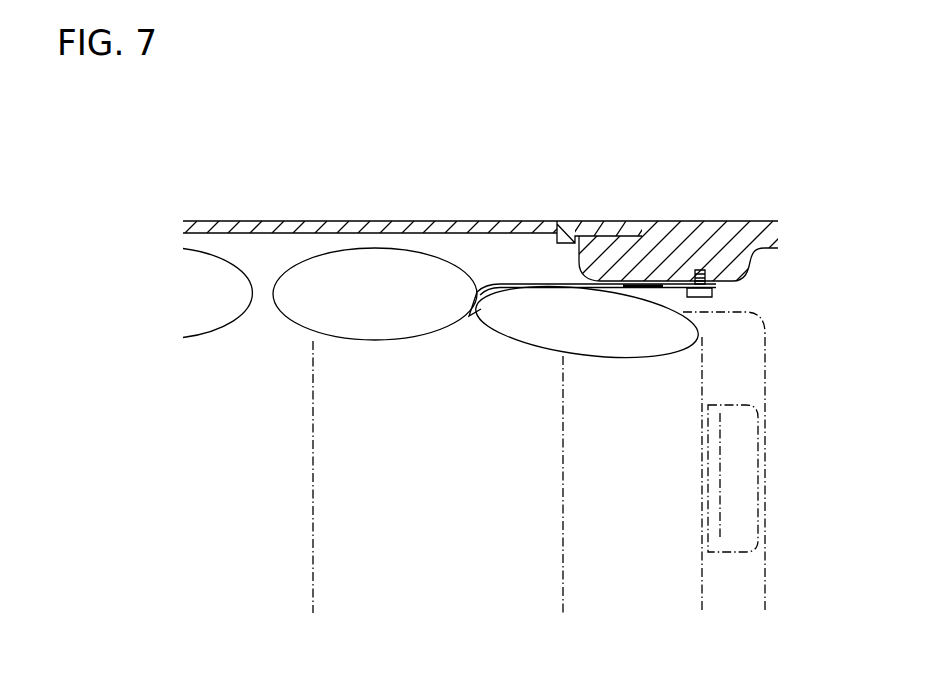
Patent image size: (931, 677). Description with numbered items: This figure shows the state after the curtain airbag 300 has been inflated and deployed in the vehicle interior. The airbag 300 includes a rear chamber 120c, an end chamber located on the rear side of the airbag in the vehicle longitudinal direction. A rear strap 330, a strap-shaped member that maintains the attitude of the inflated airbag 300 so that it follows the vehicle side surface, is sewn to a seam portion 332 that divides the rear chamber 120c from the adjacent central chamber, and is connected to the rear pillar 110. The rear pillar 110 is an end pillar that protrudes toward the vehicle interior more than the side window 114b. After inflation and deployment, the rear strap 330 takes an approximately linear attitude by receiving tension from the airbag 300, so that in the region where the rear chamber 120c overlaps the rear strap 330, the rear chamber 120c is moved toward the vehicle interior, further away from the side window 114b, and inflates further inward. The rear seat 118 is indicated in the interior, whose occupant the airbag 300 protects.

The side window 114b is at (319, 220).
The rear pillar 110 is at (707, 227).
The rear strap 330 is at (522, 283).
The seam portion 332 is at (478, 290).
The airbag 300 is at (250, 342).
The rear chamber 120c is at (522, 330).
The rear seat 118 is at (757, 378).